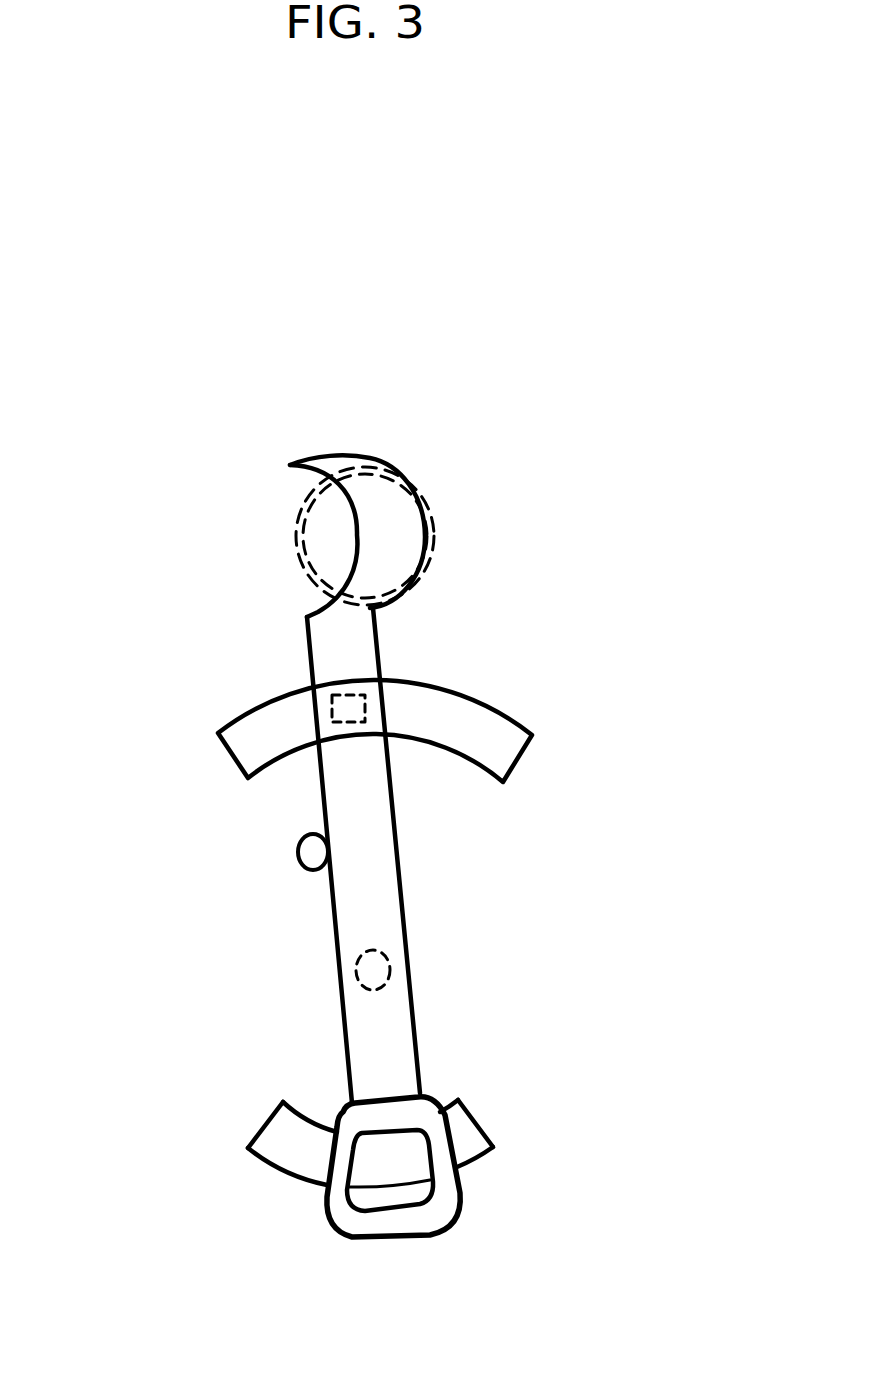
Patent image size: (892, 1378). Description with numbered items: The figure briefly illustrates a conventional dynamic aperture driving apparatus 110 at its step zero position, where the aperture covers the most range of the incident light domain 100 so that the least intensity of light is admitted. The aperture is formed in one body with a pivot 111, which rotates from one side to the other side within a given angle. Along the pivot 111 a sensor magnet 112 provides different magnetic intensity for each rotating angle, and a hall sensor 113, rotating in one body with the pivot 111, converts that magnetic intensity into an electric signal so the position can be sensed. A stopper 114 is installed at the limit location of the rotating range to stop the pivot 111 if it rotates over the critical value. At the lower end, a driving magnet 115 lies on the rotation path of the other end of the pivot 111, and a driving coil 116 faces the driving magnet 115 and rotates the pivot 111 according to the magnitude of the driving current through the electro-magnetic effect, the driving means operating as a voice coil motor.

The dynamic aperture driving apparatus 110 is at (500, 482).
The incident light domain 100 is at (315, 533).
The pivot 111 is at (315, 643).
The sensor magnet 112 is at (247, 720).
The hall sensor 113 is at (362, 697).
The stopper 114 is at (307, 853).
The driving magnet 115 is at (278, 1132).
The driving coil 116 is at (413, 1222).